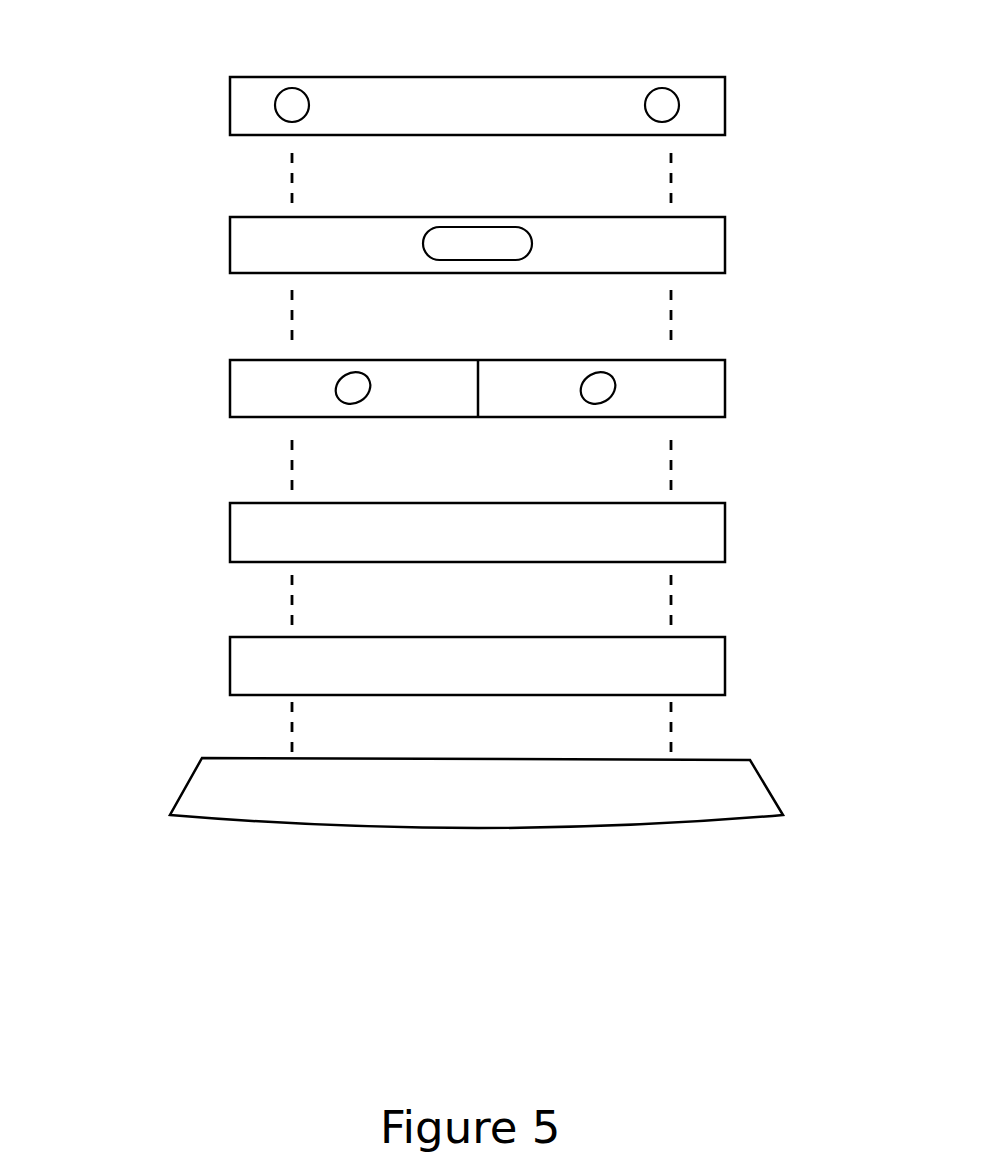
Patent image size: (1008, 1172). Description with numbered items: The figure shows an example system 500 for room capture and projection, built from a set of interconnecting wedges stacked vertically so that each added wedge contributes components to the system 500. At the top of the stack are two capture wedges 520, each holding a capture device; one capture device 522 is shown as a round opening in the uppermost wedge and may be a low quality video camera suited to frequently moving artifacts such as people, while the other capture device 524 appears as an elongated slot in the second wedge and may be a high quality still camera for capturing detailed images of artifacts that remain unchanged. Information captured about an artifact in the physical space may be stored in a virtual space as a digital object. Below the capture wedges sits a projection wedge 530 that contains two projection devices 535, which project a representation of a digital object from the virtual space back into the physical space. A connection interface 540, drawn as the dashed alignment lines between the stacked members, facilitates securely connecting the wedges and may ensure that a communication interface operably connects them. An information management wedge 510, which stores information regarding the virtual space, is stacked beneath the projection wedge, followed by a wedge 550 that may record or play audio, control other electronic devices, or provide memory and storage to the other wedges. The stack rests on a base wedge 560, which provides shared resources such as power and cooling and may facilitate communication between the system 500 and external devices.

The system 500 is at (188, 133).
The information management wedge 510 is at (725, 530).
The capture wedge 520 is at (727, 100).
The capture device 522 is at (663, 88).
The capture device 524 is at (478, 227).
The projection wedge 530 is at (725, 387).
The projection device 535 is at (365, 372).
The connection interface 540 is at (290, 482).
The wedge 550 is at (725, 661).
The base wedge 560 is at (770, 790).